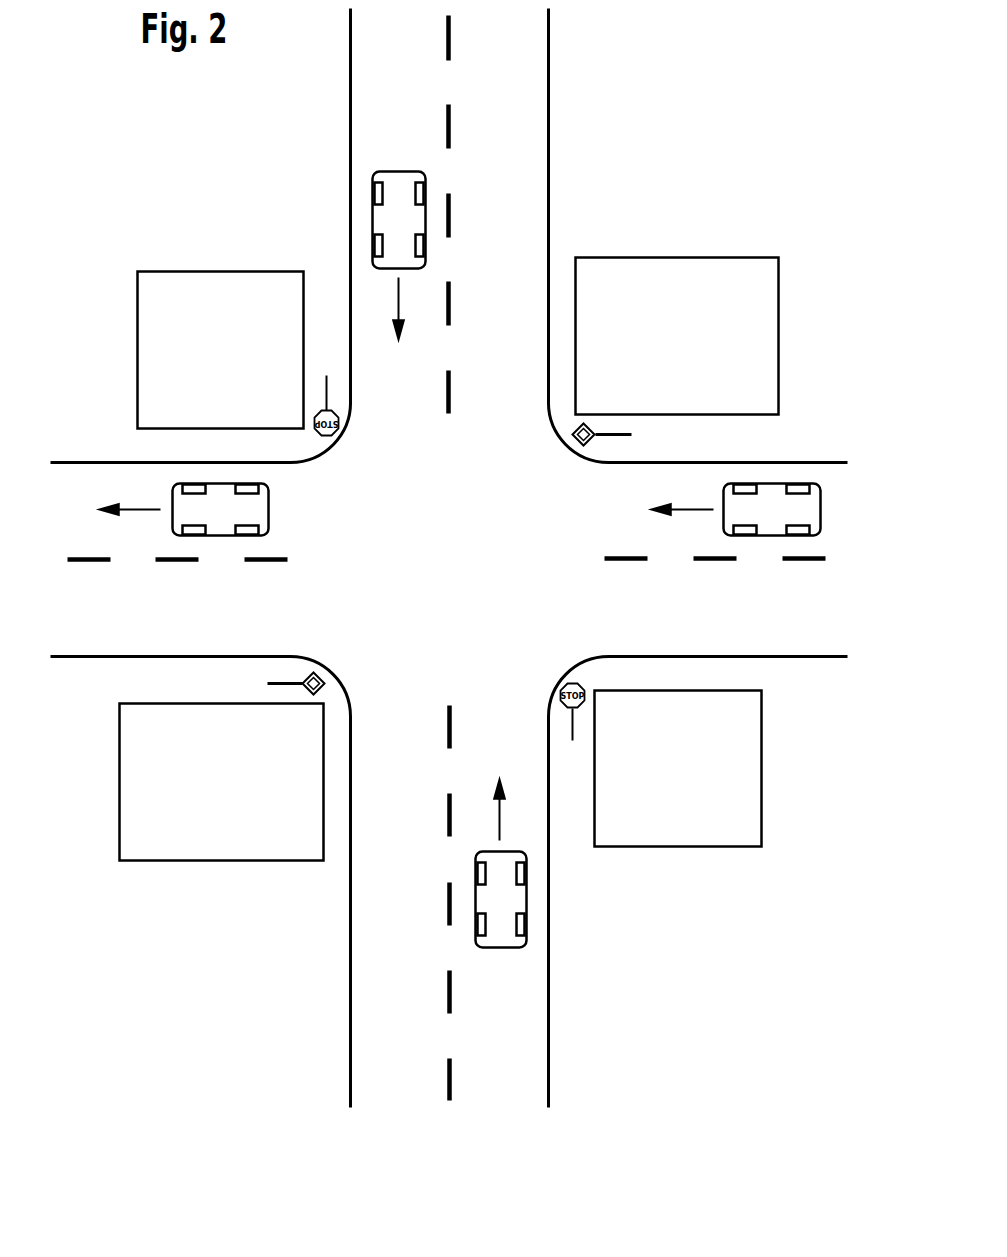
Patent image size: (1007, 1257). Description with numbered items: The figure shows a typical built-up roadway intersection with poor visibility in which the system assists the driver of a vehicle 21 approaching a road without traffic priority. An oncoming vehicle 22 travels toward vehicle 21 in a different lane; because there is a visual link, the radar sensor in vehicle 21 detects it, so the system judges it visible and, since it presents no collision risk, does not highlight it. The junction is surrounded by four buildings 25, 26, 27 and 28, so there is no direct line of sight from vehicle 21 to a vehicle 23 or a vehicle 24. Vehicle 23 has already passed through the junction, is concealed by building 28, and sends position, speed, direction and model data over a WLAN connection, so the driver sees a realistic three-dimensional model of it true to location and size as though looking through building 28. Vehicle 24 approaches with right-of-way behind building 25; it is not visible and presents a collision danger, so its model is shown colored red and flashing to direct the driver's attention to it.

The vehicle 21 is at (499, 940).
The vehicle 22 is at (399, 179).
The vehicle 23 is at (255, 510).
The vehicle 24 is at (772, 522).
The building 25 is at (681, 833).
The building 26 is at (677, 270).
The building 27 is at (217, 286).
The building 28 is at (217, 852).